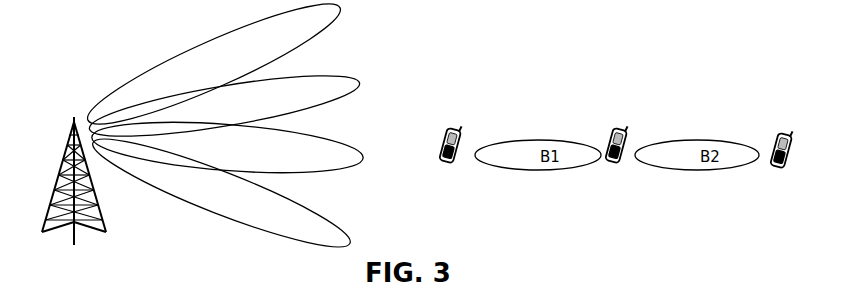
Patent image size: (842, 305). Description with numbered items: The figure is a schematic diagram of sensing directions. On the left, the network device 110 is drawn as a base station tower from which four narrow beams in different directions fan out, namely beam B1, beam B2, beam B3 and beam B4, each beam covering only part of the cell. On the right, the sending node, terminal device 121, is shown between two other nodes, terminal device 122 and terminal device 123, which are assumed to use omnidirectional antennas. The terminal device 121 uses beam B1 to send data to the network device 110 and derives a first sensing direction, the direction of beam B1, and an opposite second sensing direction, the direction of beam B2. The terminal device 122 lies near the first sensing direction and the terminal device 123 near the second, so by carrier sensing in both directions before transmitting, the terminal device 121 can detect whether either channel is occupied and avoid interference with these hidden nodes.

The network device 110 is at (63, 157).
The terminal device 121 is at (606, 140).
The terminal device 122 is at (435, 138).
The terminal device 123 is at (769, 146).
The beam B1 is at (214, 70).
The beam B2 is at (224, 105).
The beam B3 is at (227, 147).
The beam B4 is at (221, 192).